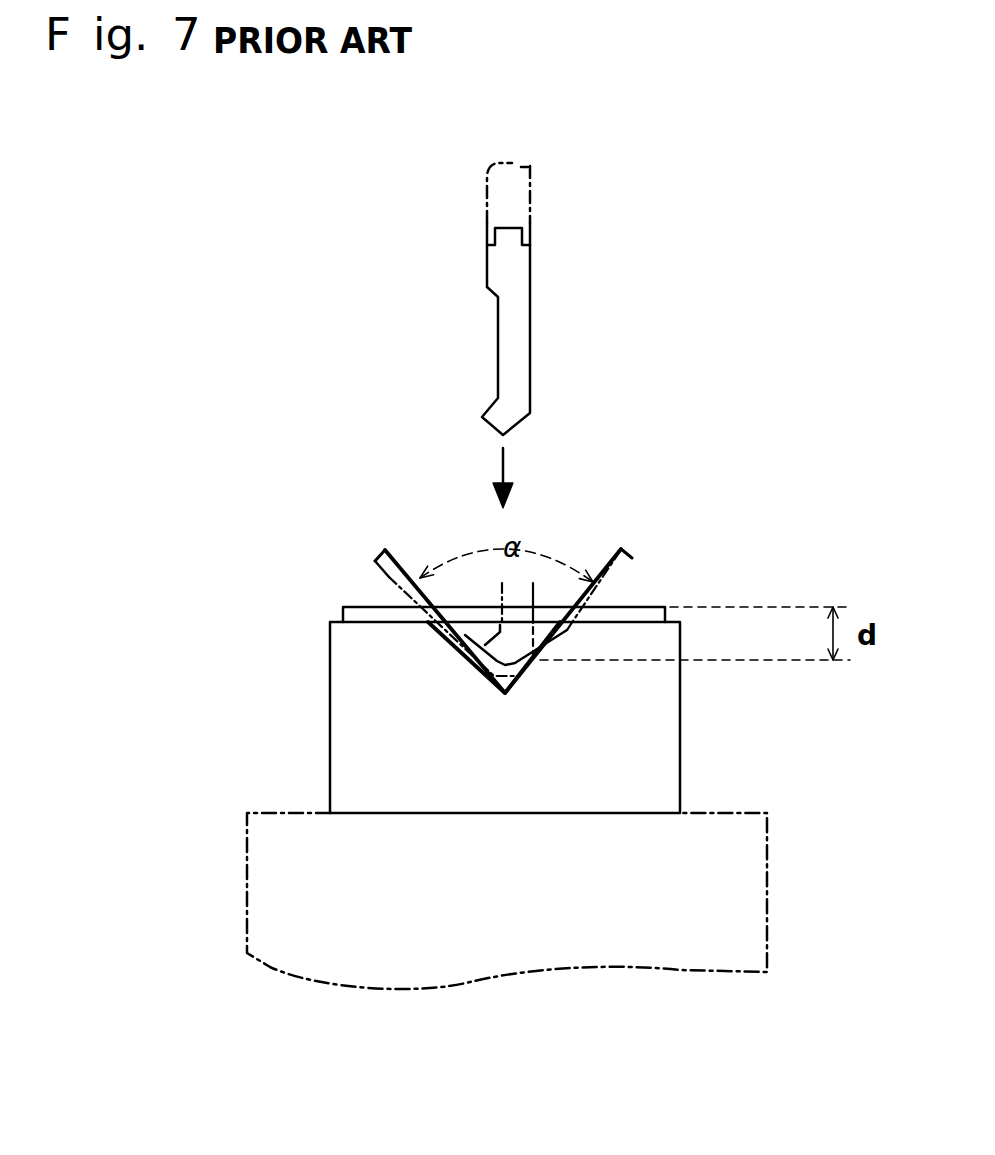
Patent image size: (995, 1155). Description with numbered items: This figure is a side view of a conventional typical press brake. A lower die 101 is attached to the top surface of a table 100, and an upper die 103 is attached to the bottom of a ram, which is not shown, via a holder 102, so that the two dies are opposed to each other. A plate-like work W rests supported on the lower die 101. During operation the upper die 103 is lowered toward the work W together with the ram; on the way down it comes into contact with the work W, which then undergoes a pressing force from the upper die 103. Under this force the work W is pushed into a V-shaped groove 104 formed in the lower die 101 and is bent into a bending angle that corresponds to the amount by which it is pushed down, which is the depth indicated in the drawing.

The table 100 is at (767, 858).
The lower die 101 is at (680, 707).
The holder 102 is at (528, 193).
The upper die 103 is at (522, 348).
The V-shaped groove 104 is at (458, 644).
The work W is at (353, 607).